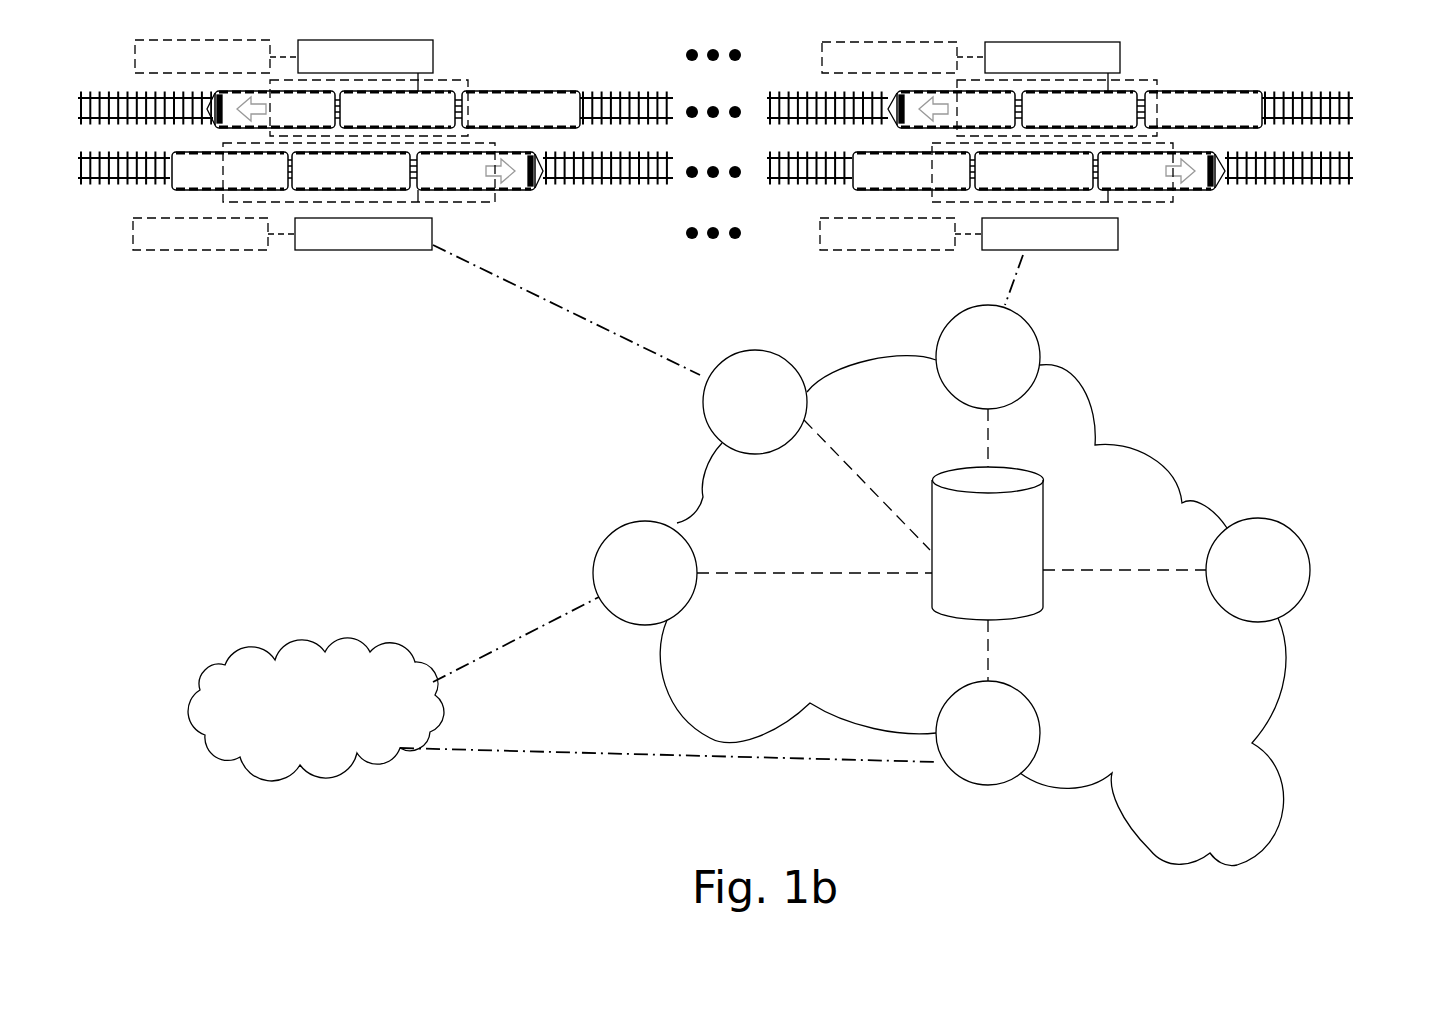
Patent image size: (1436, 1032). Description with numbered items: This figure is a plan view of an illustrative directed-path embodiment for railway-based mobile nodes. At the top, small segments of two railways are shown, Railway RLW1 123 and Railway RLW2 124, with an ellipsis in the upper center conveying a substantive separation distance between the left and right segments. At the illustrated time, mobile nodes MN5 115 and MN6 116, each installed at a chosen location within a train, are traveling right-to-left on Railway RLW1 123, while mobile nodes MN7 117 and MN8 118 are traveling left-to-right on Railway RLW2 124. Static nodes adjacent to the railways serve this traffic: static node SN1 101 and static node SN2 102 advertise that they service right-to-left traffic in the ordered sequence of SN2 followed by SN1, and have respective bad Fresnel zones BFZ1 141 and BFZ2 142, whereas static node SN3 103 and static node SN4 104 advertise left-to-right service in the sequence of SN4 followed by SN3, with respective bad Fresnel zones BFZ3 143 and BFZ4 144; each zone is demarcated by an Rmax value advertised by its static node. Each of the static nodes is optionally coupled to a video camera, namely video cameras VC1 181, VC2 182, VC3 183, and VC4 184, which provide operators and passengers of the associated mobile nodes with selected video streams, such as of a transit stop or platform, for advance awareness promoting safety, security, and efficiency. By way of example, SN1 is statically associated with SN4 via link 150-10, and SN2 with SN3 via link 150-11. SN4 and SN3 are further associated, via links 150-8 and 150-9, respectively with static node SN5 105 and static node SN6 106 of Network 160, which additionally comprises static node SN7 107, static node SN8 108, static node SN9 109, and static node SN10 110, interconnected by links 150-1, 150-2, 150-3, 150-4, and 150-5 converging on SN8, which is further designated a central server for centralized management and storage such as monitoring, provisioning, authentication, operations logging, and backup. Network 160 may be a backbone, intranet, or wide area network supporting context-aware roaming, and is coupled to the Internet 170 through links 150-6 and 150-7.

The static node SN1 101 is at (411, 67).
The static node SN2 102 is at (1098, 67).
The static node SN3 103 is at (1095, 245).
The static node SN4 104 is at (409, 245).
The static node SN5 105 is at (736, 428).
The static node SN6 106 is at (969, 383).
The static node SN7 107 is at (1239, 596).
The static node SN8 and central server 108 is at (971, 607).
The static node SN9 109 is at (626, 599).
The static node SN10 110 is at (969, 759).
The mobile node MN5 115 is at (570, 87).
The mobile node MN6 116 is at (1252, 87).
The mobile node MN7 117 is at (169, 197).
The mobile node MN8 118 is at (874, 200).
The railway RLW1 123 is at (1362, 130).
The railway RLW2 124 is at (1362, 193).
The bad Fresnel zone BFZ1 141 is at (483, 67).
The bad Fresnel zone BFZ2 142 is at (1177, 66).
The bad Fresnel zone BFZ3 143 is at (925, 142).
The bad Fresnel zone BFZ4 144 is at (216, 141).
The link 150-1 is at (835, 450).
The link 150-2 is at (990, 443).
The link 150-3 is at (1118, 568).
The link 150-4 is at (810, 572).
The link 150-5 is at (990, 657).
The link 150-6 is at (533, 628).
The link 150-7 is at (527, 752).
The link 150-8 is at (580, 317).
The link 150-9 is at (1012, 283).
The link 150-10 is at (420, 203).
The link 150-11 is at (1110, 203).
The network 160 is at (1143, 733).
The Internet 170 is at (298, 733).
The video camera VC1 181 is at (248, 67).
The video camera VC2 182 is at (935, 67).
The video camera VC3 183 is at (933, 245).
The video camera VC4 184 is at (246, 245).